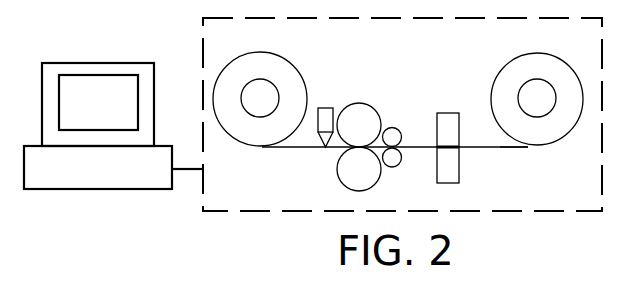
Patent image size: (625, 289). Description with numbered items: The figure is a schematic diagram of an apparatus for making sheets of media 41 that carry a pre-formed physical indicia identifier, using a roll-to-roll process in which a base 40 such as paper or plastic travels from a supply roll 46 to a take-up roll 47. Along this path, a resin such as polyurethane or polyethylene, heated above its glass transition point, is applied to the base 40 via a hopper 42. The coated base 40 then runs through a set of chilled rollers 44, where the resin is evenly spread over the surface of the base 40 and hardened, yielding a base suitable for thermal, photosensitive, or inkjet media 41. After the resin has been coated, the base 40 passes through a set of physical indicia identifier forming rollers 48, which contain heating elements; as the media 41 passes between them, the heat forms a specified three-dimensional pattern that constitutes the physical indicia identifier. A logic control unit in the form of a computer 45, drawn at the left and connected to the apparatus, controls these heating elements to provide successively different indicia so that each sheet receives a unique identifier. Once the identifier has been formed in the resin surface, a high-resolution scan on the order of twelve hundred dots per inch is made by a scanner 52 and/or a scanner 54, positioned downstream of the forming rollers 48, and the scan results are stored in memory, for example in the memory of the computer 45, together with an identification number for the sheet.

The computer 45 is at (52, 63).
The base 40 is at (280, 148).
The roll 46 is at (280, 55).
The roll 47 is at (557, 53).
The hopper 42 is at (323, 108).
The chilled rollers 44 is at (360, 103).
The physical indicia identifier forming rollers 48 is at (396, 128).
The scanner 52 is at (445, 113).
The scanner 54 is at (460, 170).
The media 41 is at (525, 147).